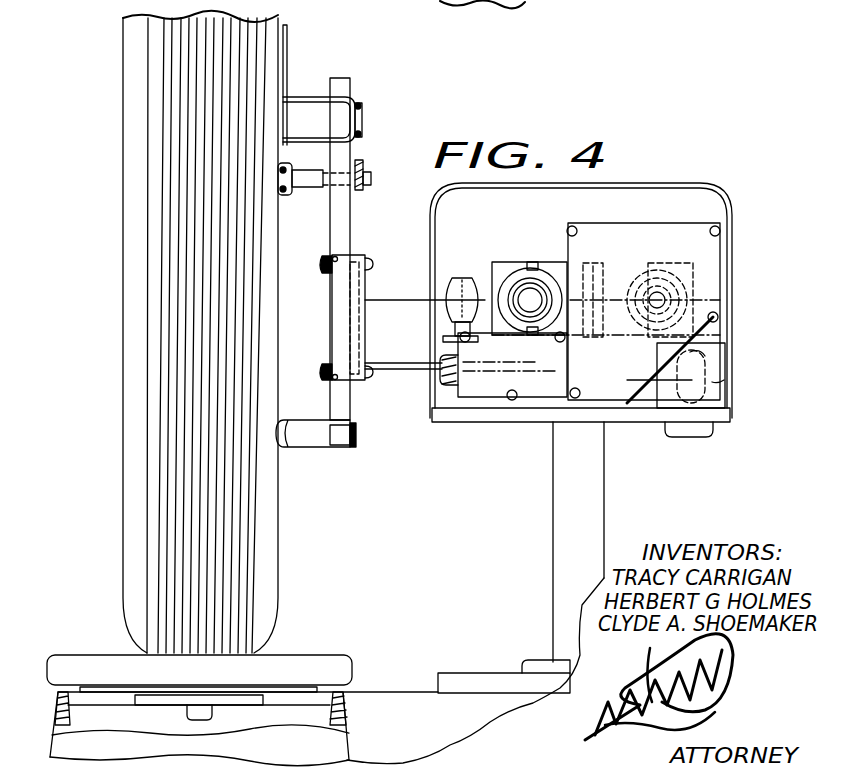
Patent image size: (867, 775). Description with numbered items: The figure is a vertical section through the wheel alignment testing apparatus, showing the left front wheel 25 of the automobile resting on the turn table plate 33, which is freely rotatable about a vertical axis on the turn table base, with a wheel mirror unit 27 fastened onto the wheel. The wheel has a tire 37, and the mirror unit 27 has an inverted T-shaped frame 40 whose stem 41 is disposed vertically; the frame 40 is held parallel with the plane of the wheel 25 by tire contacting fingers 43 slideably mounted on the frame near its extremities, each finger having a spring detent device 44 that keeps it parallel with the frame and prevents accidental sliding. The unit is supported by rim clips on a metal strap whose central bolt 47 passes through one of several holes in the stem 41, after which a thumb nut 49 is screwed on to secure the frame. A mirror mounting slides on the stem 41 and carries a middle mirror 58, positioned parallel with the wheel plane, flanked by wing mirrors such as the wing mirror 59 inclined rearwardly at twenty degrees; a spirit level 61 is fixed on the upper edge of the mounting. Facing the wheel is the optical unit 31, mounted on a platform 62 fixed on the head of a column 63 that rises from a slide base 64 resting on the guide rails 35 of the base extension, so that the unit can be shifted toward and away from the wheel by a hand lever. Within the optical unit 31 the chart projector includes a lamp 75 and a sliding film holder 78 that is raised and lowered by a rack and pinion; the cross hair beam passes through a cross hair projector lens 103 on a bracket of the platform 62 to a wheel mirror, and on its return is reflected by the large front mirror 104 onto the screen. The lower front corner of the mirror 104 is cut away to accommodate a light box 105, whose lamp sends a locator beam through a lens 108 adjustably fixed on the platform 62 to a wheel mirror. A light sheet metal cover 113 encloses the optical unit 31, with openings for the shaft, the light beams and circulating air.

The left front wheel 25 is at (282, 628).
The wheel mirror unit 27 is at (432, 115).
The optical unit 31 is at (736, 428).
The turn table plate 33 is at (330, 668).
The guide rails 35 is at (412, 682).
The tire 37 is at (275, 492).
The inverted T-shaped frame 40 is at (342, 446).
The stem 41 is at (342, 397).
The tire contacting fingers 43 is at (286, 56).
The spring detent device 44 is at (362, 110).
The central bolt 47 is at (372, 178).
The thumb nut 49 is at (359, 194).
The middle mirror 58 is at (366, 272).
The wing mirror 59 is at (350, 338).
The spirit level 61 is at (354, 256).
The platform 62 is at (647, 428).
The column 63 is at (598, 470).
The slide base 64 is at (532, 660).
The lamp 75 is at (705, 354).
The sliding film holder 78 is at (585, 270).
The cross hair projector lens 103 is at (462, 282).
The front mirror 104 is at (628, 234).
The light box 105 is at (712, 374).
The lens 108 is at (440, 375).
The sheet metal cover 113 is at (724, 380).